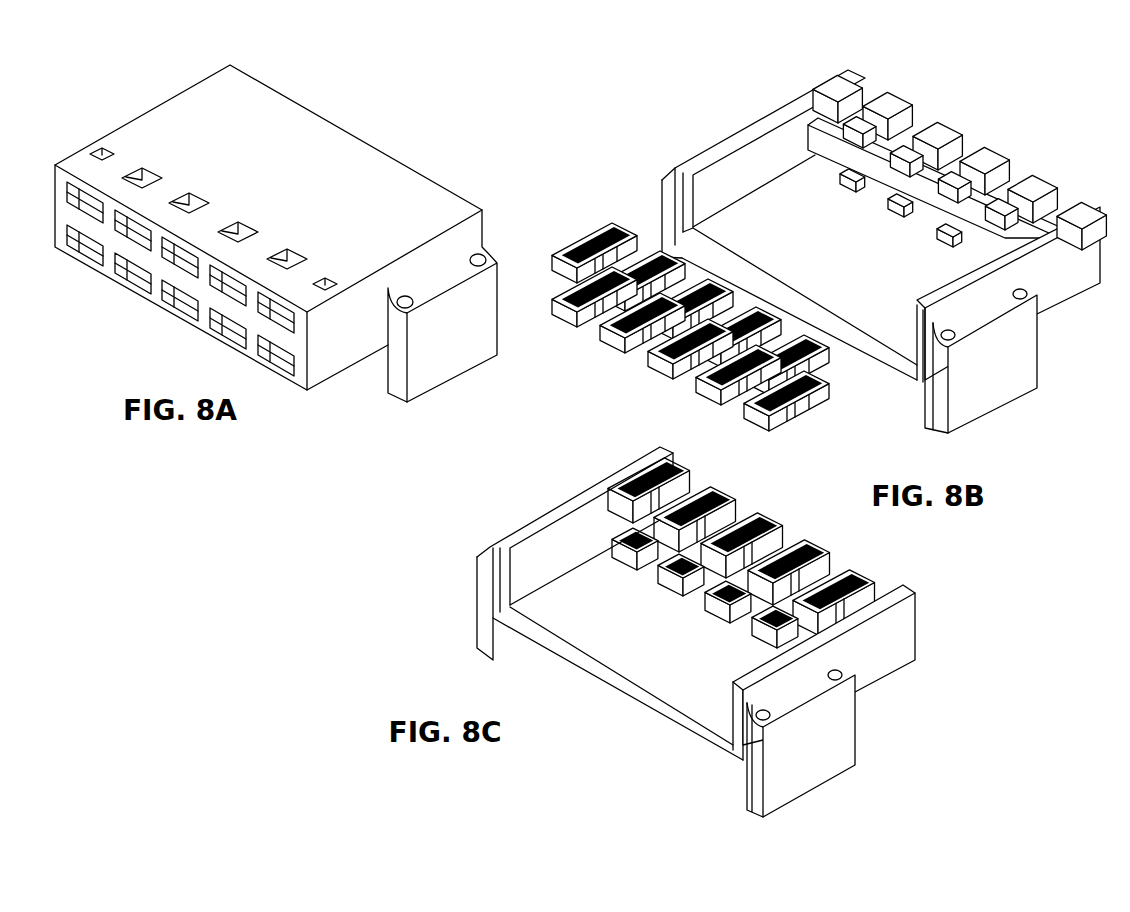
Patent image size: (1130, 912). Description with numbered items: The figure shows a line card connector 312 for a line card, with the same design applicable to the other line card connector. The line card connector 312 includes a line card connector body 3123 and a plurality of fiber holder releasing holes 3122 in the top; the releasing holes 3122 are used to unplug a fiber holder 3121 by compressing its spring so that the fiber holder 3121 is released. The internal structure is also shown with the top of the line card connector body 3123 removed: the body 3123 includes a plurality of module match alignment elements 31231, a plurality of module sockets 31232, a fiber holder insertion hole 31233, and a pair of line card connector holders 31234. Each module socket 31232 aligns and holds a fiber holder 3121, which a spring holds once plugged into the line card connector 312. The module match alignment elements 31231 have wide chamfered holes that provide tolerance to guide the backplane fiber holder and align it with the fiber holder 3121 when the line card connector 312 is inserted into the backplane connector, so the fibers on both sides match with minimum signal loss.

In FIG. 8A, the line card connector 312 is at (271, 210).
In FIG. 8B, the fiber holder 3121 is at (590, 221).
In FIG. 8C, the fiber holder 3121 is at (605, 510).
In FIG. 8A, the fiber holder releasing holes 3122 is at (136, 168).
In FIG. 8A, the line card connector body 3123 is at (379, 211).
In FIG. 8B, the line card connector body 3123 is at (855, 254).
In FIG. 8C, the line card connector body 3123 is at (662, 636).
In FIG. 8B, the module match alignment element 31231 is at (987, 148).
In FIG. 8B, the module socket 31232 is at (907, 158).
In FIG. 8B, the fiber holder insertion hole 31233 is at (826, 305).
In FIG. 8B, the line card connector holders 31234 is at (1003, 367).
In FIG. 8C, the line card connector holders 31234 is at (830, 726).